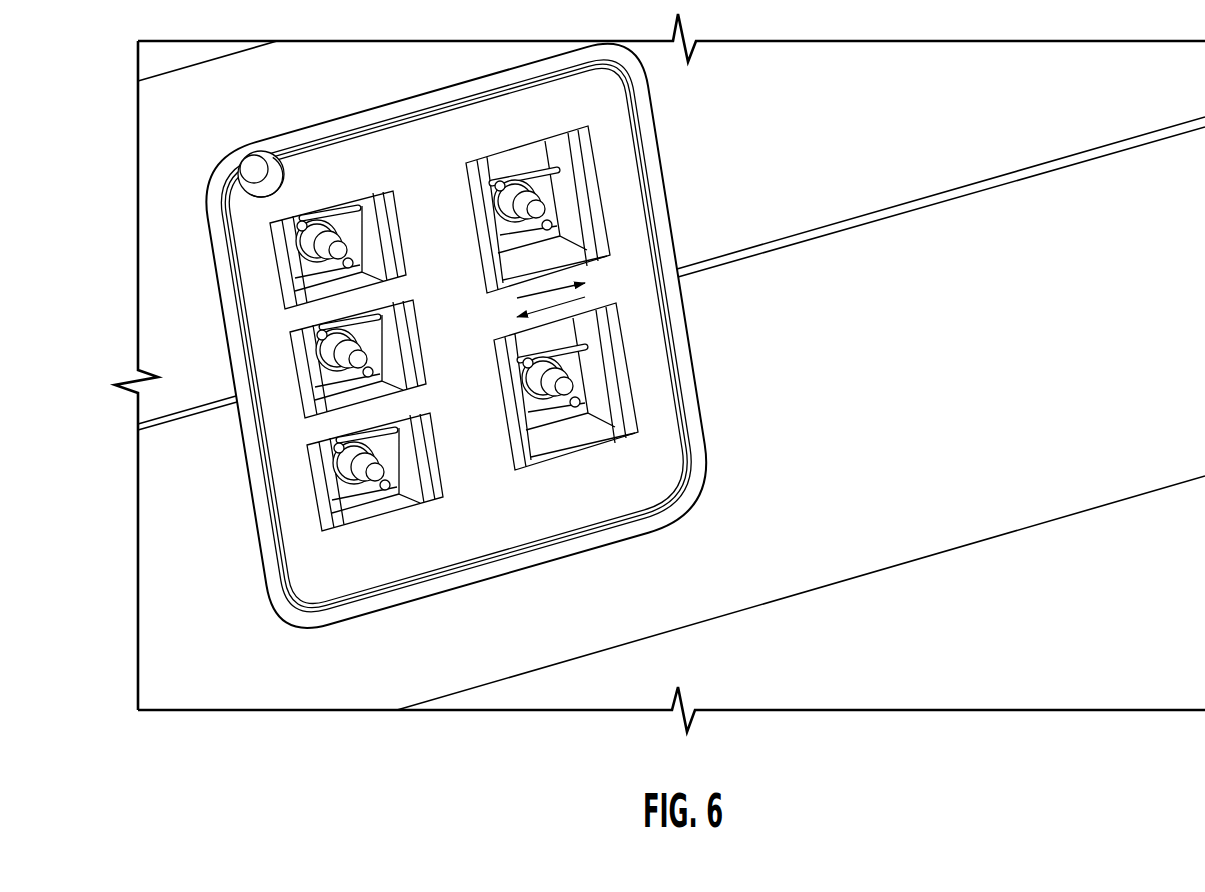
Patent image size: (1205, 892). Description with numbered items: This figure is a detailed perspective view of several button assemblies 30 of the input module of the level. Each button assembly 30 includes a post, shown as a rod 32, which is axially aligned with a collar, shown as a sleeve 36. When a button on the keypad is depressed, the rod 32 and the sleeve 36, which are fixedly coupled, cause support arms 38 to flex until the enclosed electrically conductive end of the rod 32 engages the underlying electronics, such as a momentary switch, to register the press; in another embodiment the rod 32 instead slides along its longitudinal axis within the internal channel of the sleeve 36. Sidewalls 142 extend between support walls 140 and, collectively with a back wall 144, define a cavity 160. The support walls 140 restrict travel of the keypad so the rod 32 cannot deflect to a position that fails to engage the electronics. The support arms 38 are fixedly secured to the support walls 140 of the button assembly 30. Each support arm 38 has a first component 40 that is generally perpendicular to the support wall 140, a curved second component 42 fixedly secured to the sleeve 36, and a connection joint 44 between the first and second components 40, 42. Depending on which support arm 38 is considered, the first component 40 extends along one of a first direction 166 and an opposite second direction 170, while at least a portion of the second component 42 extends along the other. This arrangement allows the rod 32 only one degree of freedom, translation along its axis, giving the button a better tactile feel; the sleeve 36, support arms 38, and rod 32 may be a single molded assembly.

The button assembly 30 is at (391, 186).
The support wall 140 is at (362, 226).
The sidewall 142 is at (578, 448).
The back wall 144 is at (550, 338).
The cavity 160 is at (544, 443).
The rod 32 is at (316, 250).
The sleeve 36 is at (314, 353).
The support arm 38 is at (338, 322).
The first component 40 is at (314, 392).
The second component 42 is at (335, 468).
The connection joint 44 is at (391, 492).
The first direction 166 is at (572, 312).
The second direction 170 is at (572, 287).